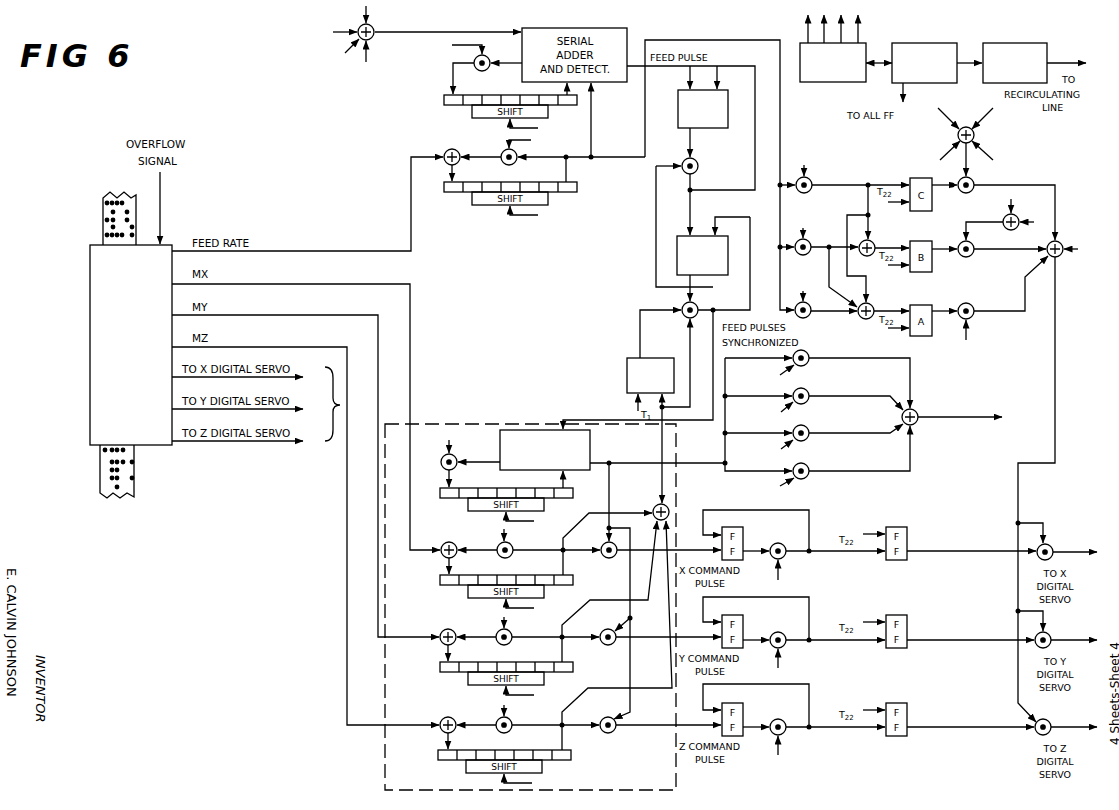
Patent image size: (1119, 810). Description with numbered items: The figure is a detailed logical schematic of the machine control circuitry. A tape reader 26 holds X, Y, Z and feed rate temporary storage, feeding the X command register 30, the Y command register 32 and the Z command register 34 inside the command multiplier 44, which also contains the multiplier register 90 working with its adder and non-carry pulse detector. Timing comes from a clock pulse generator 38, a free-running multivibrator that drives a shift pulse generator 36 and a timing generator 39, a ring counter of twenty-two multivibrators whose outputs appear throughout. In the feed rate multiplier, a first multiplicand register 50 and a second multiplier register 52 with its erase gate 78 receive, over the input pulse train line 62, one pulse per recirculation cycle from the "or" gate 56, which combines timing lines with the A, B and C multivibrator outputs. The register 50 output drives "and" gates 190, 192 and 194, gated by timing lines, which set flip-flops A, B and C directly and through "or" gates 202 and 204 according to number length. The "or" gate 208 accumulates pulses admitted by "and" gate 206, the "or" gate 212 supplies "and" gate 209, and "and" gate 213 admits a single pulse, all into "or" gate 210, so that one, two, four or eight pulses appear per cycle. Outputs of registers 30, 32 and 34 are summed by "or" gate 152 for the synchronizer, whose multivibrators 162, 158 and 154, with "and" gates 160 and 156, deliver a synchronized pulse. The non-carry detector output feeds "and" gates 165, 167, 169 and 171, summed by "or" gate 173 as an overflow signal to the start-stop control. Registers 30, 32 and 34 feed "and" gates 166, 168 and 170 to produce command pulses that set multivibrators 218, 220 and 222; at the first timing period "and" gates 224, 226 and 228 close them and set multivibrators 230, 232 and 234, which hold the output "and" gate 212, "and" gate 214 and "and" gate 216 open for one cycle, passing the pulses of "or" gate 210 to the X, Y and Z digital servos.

The reader 26 is at (92, 244).
The "or" gate 56 is at (372, 38).
The input pulse train line 62 is at (444, 32).
The erase gate 78 is at (488, 70).
The second multiplier register 52 is at (454, 105).
The first multiplicand register 50 is at (453, 193).
The bistable multivibrator 162 is at (700, 128).
The "and" gate 160 is at (697, 162).
The bistable multivibrator 158 is at (728, 269).
The "and" gate 156 is at (681, 306).
The bistable multivibrator 154 is at (627, 380).
The timing generator 39 is at (836, 82).
The clock pulse generator 38 is at (936, 42).
The shift pulse generator 36 is at (1035, 42).
The "or" gate 208 is at (976, 135).
The "and" gate 206 is at (960, 196).
The "and" gate 190 is at (812, 178).
The "and" gate 192 is at (810, 240).
The "and" gate 194 is at (810, 317).
The "or" gate 202 is at (882, 234).
The "or" gate 204 is at (872, 304).
The "or" gate / "and" gate 212 is at (1019, 219).
The "and" gate 209 is at (969, 259).
The "or" gate 210 is at (1061, 257).
The "and" gate 213 is at (972, 317).
The "and" gate 171 is at (808, 353).
The "and" gate 169 is at (808, 391).
The "and" gate 167 is at (808, 429).
The "and" gate 165 is at (808, 466).
The "or" gate 173 is at (918, 409).
The command multiplier 44 is at (385, 754).
The multiplier register 90 is at (448, 498).
The X command register 30 is at (440, 580).
The Y command register 32 is at (440, 668).
The Z command register 34 is at (438, 754).
The "and" gate 166 is at (603, 557).
The "and" gate 168 is at (603, 645).
The "and" gate 170 is at (614, 731).
The "or" gate 152 is at (667, 506).
The multivibrator 218 is at (743, 533).
The multivibrator 220 is at (743, 621).
The multivibrator 222 is at (743, 709).
The "and" gate 224 is at (786, 556).
The "and" gate 226 is at (786, 645).
The "and" gate 228 is at (786, 732).
The multivibrator 230 is at (907, 535).
The multivibrator 232 is at (907, 623).
The multivibrator 234 is at (907, 710).
The "and" gate 214 is at (1049, 634).
The "and" gate 216 is at (1056, 715).